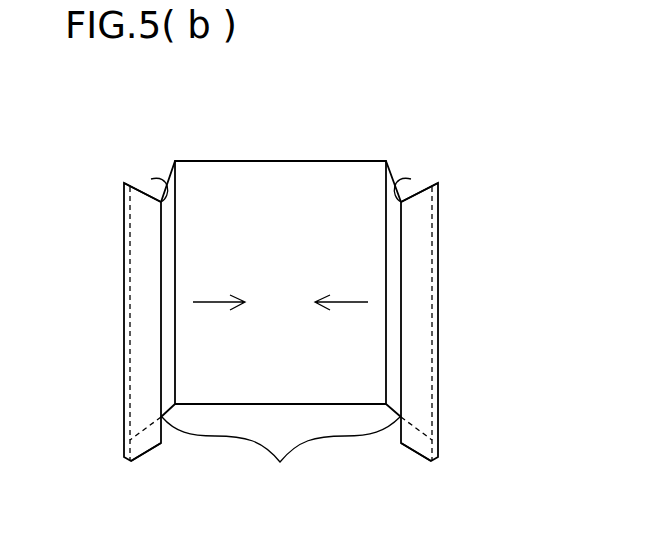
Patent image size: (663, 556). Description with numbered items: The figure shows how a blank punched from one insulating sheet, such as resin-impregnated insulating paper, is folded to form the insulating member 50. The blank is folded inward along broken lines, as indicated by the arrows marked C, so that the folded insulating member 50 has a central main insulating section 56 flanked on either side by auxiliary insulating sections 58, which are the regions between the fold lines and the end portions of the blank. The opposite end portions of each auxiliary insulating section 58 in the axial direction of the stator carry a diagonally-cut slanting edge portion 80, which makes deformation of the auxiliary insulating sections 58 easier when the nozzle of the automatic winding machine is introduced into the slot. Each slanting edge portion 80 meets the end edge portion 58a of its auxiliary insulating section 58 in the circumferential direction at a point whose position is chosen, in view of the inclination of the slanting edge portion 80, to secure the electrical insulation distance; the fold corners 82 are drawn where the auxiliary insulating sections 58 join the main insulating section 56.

The insulating member 50 is at (303, 152).
The main insulating section 56 is at (247, 192).
The auxiliary insulating section 58 is at (148, 282).
The end edge portion 58a is at (281, 456).
The slanting edge portion 80 is at (143, 185).
The fold corner 82 is at (167, 172).